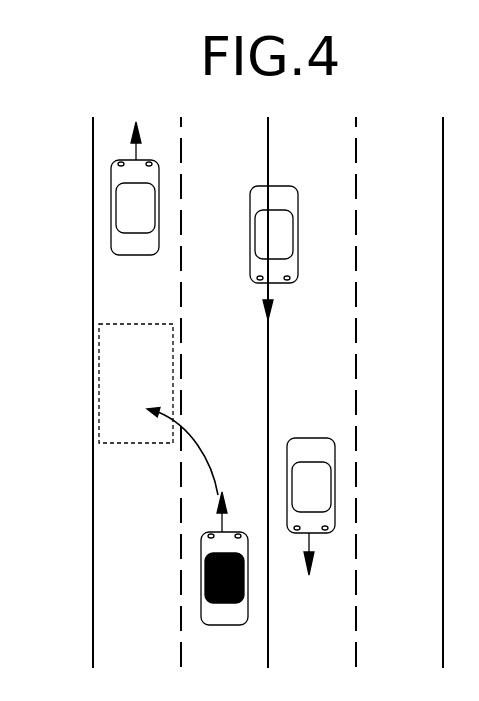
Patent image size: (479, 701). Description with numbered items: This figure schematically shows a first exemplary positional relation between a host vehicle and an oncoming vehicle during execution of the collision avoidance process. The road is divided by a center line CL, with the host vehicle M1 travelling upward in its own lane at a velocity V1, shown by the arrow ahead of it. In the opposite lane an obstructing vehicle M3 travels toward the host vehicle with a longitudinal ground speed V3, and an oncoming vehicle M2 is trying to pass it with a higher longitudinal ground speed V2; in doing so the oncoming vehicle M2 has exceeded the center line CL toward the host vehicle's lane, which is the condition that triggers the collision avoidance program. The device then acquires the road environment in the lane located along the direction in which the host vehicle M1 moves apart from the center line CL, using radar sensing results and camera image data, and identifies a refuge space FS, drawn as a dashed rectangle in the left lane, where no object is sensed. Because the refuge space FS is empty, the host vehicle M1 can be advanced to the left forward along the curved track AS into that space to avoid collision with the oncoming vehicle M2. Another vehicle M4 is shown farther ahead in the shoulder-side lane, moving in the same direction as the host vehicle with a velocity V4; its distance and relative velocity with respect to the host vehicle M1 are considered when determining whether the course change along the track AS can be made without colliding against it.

The host vehicle M1 is at (215, 622).
The oncoming vehicle M2 is at (280, 198).
The obstructing vehicle M3 is at (302, 445).
The other vehicle M4 is at (133, 248).
The velocity of host vehicle V1 is at (240, 512).
The ground speed of oncoming vehicle V2 is at (288, 302).
The ground speed of obstructing vehicle V3 is at (323, 554).
The velocity of vehicle M4 V4 is at (149, 141).
The refuge space FS is at (92, 375).
The track AS is at (200, 448).
The center line CL is at (268, 393).